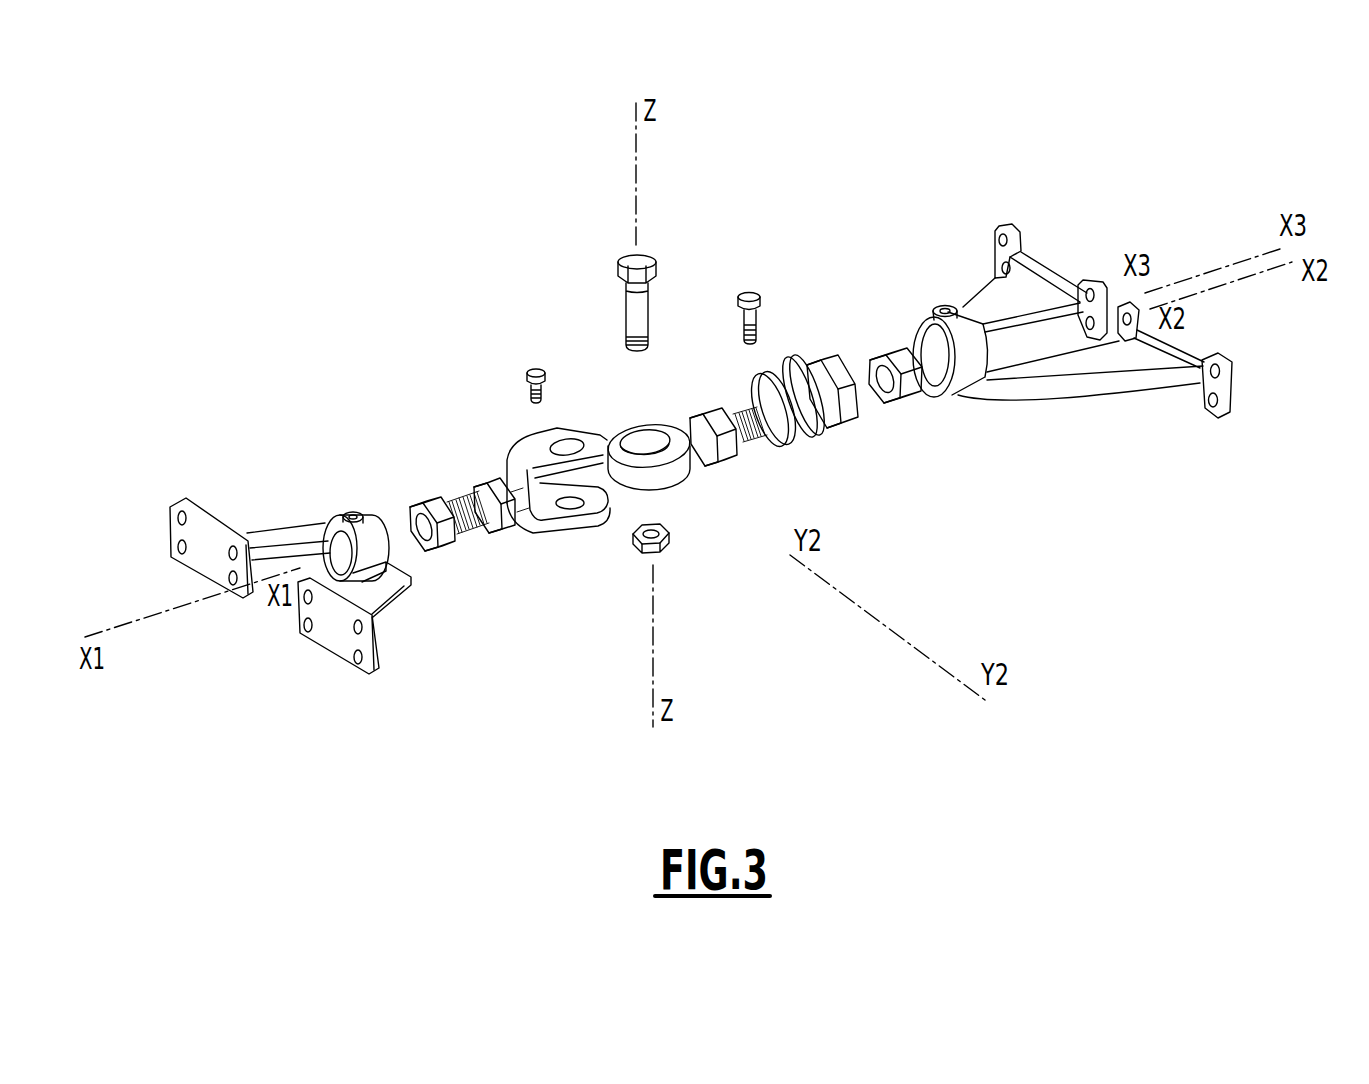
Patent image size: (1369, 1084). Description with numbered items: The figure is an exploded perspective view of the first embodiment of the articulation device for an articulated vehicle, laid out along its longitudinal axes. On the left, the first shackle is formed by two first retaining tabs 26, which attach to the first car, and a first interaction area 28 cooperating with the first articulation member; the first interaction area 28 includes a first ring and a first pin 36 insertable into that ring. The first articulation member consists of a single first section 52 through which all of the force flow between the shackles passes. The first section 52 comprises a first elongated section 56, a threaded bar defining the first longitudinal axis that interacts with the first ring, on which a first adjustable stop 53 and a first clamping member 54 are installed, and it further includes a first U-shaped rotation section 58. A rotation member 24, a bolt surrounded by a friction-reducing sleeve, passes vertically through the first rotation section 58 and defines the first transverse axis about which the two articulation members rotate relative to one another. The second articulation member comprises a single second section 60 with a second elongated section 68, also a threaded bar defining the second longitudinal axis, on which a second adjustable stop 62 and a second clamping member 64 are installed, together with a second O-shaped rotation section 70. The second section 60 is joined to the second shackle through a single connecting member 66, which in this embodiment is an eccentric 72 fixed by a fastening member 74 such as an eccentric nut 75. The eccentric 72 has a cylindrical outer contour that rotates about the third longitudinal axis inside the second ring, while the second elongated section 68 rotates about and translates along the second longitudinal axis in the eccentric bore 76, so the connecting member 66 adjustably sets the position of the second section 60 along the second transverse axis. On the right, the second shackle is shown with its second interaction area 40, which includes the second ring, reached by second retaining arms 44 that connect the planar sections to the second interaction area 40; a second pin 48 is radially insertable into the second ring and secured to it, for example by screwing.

The rotation member 24 is at (655, 248).
The first retaining tabs 26 is at (268, 524).
The first interaction area 28 is at (346, 518).
The first pin 36 is at (527, 391).
The second interaction area 40 is at (944, 406).
The second retaining arm 44 is at (982, 290).
The second pin 48 is at (753, 318).
The first section 52 is at (510, 529).
The first adjustable stop 53 is at (450, 546).
The first clamping member 54 is at (504, 528).
The first elongated section 56 is at (467, 500).
The first U-shaped rotation section 58 is at (582, 528).
The second section 60 is at (783, 400).
The second adjustable stop 62 is at (903, 406).
The second clamping member 64 is at (720, 470).
The connecting member 66 is at (801, 358).
The second elongated section 68 is at (746, 402).
The second O-shaped rotation section 70 is at (627, 436).
The eccentric 72 is at (809, 449).
The fastening member 74 is at (828, 375).
The eccentric nut 75 is at (841, 428).
The eccentric bore 76 is at (780, 440).